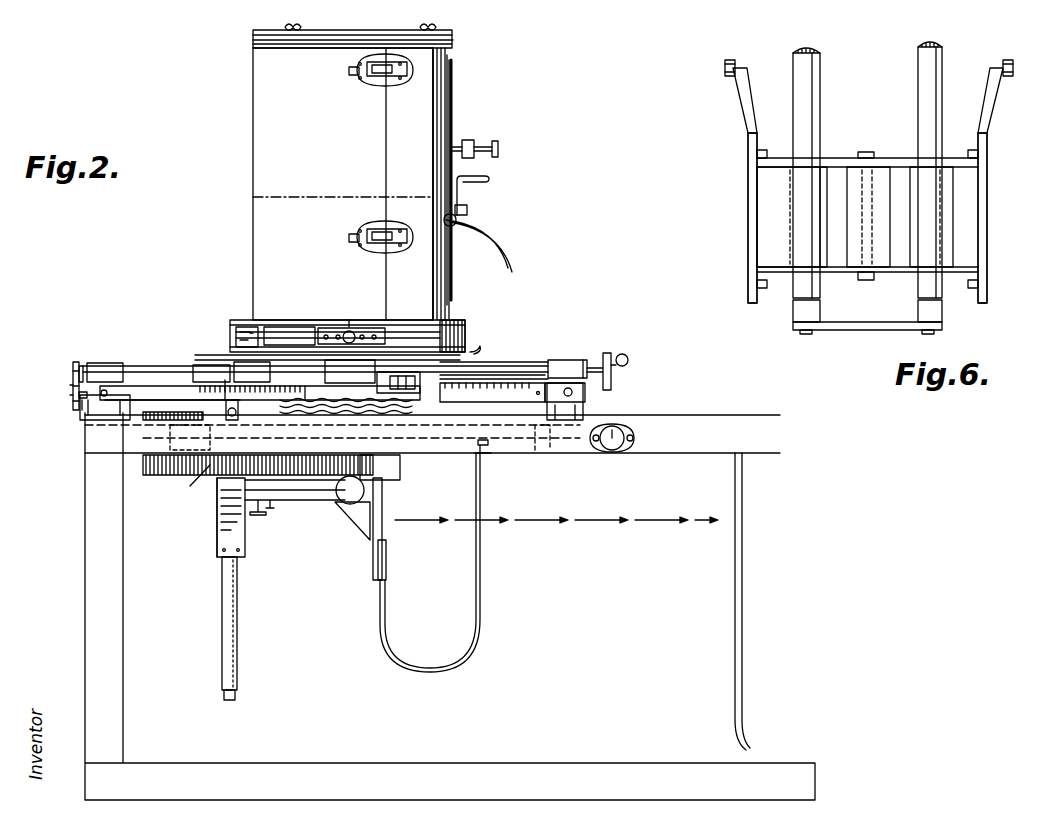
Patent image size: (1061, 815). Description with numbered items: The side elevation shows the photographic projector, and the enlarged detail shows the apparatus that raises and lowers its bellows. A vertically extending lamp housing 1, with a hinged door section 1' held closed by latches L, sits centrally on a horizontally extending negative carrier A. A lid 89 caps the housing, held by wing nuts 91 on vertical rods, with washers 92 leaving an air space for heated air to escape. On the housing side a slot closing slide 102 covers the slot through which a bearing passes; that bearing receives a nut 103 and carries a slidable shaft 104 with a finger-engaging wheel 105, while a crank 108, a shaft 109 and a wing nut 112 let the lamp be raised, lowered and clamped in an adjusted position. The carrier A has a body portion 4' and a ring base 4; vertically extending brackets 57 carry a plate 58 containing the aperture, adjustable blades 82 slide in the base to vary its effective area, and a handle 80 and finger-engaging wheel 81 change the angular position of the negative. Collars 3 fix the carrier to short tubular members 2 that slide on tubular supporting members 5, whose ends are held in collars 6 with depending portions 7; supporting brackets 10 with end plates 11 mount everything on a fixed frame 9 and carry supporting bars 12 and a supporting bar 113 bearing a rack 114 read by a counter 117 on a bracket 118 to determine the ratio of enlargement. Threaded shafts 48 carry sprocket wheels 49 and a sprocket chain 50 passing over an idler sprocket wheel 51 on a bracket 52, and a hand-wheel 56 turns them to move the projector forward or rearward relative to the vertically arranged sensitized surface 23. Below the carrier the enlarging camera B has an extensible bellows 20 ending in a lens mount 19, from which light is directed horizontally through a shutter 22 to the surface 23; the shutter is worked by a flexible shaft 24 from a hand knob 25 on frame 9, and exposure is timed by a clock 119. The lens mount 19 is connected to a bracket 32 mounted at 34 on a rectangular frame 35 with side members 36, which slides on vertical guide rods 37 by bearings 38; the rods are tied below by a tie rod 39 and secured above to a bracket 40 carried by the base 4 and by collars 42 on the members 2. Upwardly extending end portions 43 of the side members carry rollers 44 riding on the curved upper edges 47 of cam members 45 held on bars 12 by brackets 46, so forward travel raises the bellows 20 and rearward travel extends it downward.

In FIG. 2, the lamp housing 1 is at (448, 184).
In FIG. 2, the door section 1' is at (334, 184).
In FIG. 2, the short tubular member 2 is at (284, 340).
In FIG. 2, the collars 3 is at (335, 355).
In FIG. 2, the ring base 4 is at (315, 350).
In FIG. 2, the body portion 4' is at (372, 317).
In FIG. 2, the tubular supporting member 5 is at (520, 372).
In FIG. 2, the collars 6 is at (112, 363).
In FIG. 2, the transversely extending portions 7 is at (110, 386).
In FIG. 2, the fixed frame 9 is at (650, 425).
In FIG. 2, the supporting brackets 10 is at (100, 400).
In FIG. 2, the end plates 11 is at (120, 415).
In FIG. 2, the supporting bar 12 is at (175, 470).
In FIG. 2, the lens mount 19 is at (341, 508).
In FIG. 2, the extensible bellows 20 is at (428, 430).
In FIG. 2, the shutter 22 is at (372, 552).
In FIG. 2, the sensitized surface 23 is at (735, 586).
In FIG. 2, the flexible shaft 24 is at (482, 560).
In FIG. 2, the hand knob 25 is at (488, 452).
In FIG. 2, the bracket 32 is at (310, 500).
In FIG. 6, the bracket mounting point 34 is at (878, 228).
In FIG. 2, the frame 35 is at (210, 549).
In FIG. 6, the frame 35 is at (741, 198).
In FIG. 2, the side members 36 is at (217, 514).
In FIG. 6, the side members 36 is at (748, 162).
In FIG. 2, the guide rods 37 is at (225, 605).
In FIG. 6, the guide rods 37 is at (795, 96).
In FIG. 6, the bearings 38 is at (790, 248).
In FIG. 2, the tie rod 39 is at (224, 692).
In FIG. 6, the tie rod 39 is at (863, 326).
In FIG. 2, the bracket 40 is at (232, 366).
In FIG. 2, the collars 42 is at (228, 380).
In FIG. 2, the end portions 43 is at (205, 455).
In FIG. 6, the end portions 43 is at (740, 105).
In FIG. 2, the rollers 44 is at (249, 410).
In FIG. 6, the rollers 44 is at (725, 70).
In FIG. 2, the cam members 45 is at (185, 510).
In FIG. 2, the brackets 46 is at (150, 452).
In FIG. 2, the curved upper edges 47 is at (175, 392).
In FIG. 2, the threaded shaft 48 is at (73, 370).
In FIG. 2, the sprocket wheels 49 is at (76, 362).
In FIG. 2, the sprocket chain 50 is at (70, 393).
In FIG. 2, the idler sprocket wheel 51 is at (72, 406).
In FIG. 2, the bracket 52 is at (82, 362).
In FIG. 2, the hand-wheel 56 is at (628, 362).
In FIG. 2, the brackets 57 is at (252, 327).
In FIG. 2, the plate 58 is at (395, 372).
In FIG. 2, the handle 80 is at (352, 318).
In FIG. 2, the finger-engaging wheel 81 is at (352, 331).
In FIG. 2, the adjustable blades 82 is at (212, 365).
In FIG. 2, the lid 89 is at (452, 36).
In FIG. 2, the wing nuts 91 is at (286, 26).
In FIG. 2, the washers 92 is at (258, 42).
In FIG. 2, the slot closing slide 102 is at (453, 96).
In FIG. 2, the nut 103 is at (470, 140).
In FIG. 2, the shaft 104 is at (494, 152).
In FIG. 2, the finger-engaging wheel 105 is at (498, 142).
In FIG. 2, the crank 108 is at (489, 180).
In FIG. 2, the shaft 109 is at (470, 222).
In FIG. 2, the wing nut 112 is at (468, 209).
In FIG. 2, the supporting bar 113 is at (175, 392).
In FIG. 2, the rack 114 is at (520, 375).
In FIG. 2, the counter 117 is at (400, 405).
In FIG. 2, the bracket 118 is at (530, 405).
In FIG. 2, the clock 119 is at (615, 452).
In FIG. 2, the negative carrier A is at (231, 314).
In FIG. 2, the enlarging camera B is at (410, 468).
In FIG. 2, the latches L is at (356, 73).